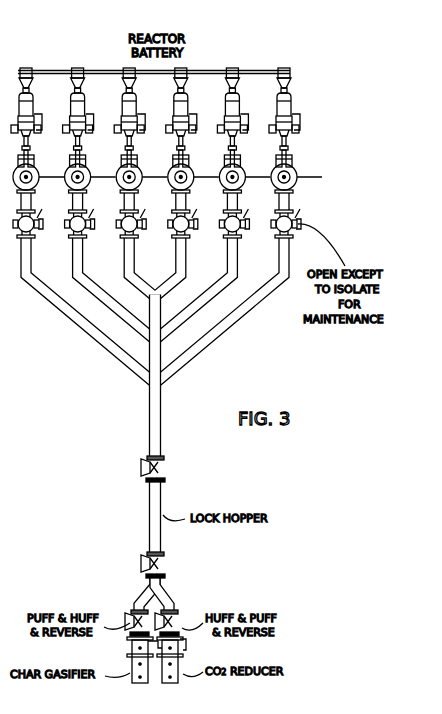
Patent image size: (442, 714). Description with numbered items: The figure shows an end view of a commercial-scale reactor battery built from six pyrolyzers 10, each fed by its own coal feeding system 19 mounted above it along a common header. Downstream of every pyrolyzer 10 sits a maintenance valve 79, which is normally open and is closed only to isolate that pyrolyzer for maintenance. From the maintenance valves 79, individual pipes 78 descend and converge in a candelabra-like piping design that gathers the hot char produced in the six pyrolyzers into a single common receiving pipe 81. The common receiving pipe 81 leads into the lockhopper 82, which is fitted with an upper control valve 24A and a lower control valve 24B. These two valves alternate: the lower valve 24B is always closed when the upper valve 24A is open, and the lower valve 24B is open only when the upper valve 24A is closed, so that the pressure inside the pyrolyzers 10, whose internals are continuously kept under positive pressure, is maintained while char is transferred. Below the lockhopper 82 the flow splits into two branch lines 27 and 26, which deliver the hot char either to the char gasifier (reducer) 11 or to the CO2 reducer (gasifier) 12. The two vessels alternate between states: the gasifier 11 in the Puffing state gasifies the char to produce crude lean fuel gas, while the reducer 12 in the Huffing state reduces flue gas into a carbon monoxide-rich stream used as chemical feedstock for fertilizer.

The coal feeding system 19 is at (33, 112).
The pyrolyzer 10 is at (35, 169).
The maintenance valve 79 is at (35, 229).
The individual pipes 78 is at (62, 314).
The common receiving pipe 81 is at (150, 415).
The upper control valve 24A is at (139, 466).
The lockhopper 82 is at (150, 507).
The lower control valve 24B is at (139, 563).
The char gasifier feed line 27 is at (143, 596).
The CO2 reducer feed line 26 is at (166, 599).
The char gasifier (reducer) 11 is at (131, 652).
The CO2 reducer (gasifier) 12 is at (183, 660).